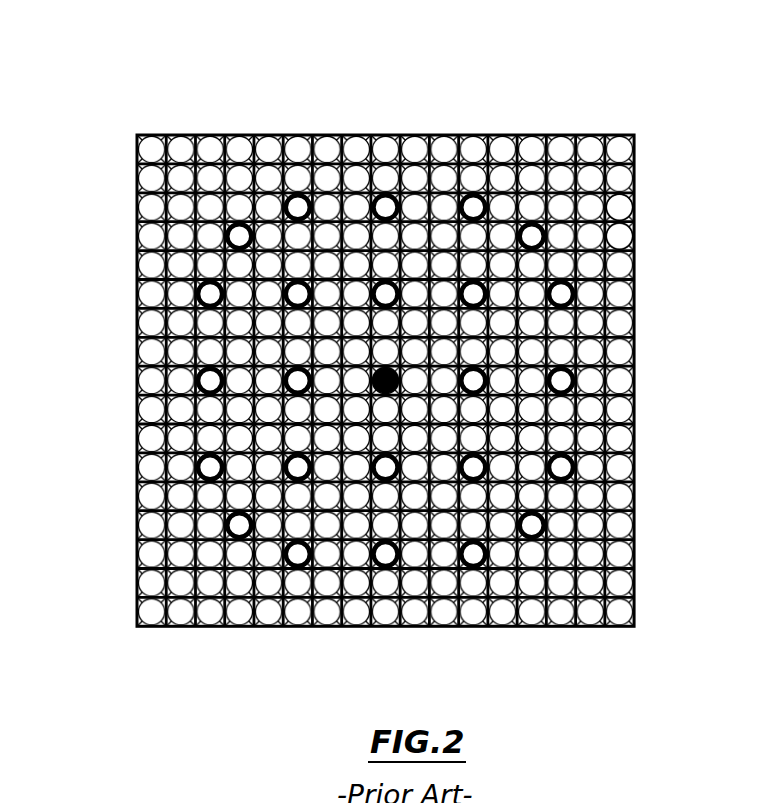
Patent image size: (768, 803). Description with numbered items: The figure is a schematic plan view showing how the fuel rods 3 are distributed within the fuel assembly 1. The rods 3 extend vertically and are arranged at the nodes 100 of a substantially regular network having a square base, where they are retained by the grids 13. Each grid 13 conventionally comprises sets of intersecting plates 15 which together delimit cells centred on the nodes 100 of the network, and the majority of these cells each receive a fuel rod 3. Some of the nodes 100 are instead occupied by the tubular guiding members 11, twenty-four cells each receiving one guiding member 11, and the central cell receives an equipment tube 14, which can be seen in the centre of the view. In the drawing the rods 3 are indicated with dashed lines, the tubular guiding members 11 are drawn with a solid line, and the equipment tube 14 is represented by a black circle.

The display apparatus 1 is at (667, 376).
The fuel rods 3 is at (618, 238).
The tubular guiding members 11 is at (532, 525).
The grids 13 is at (238, 120).
The equipment tube 14 is at (397, 377).
The grid lines 15 is at (622, 302).
The nodes 100 is at (500, 147).